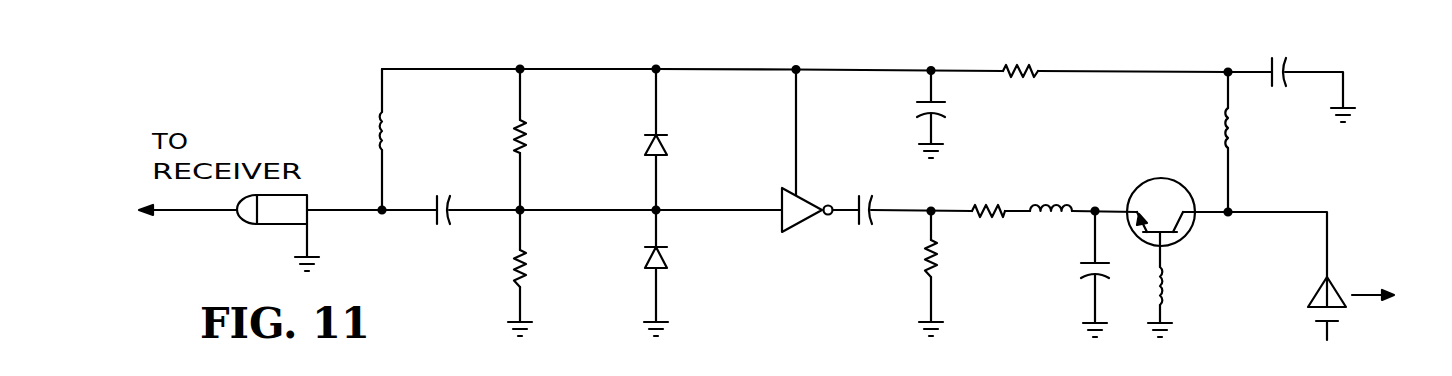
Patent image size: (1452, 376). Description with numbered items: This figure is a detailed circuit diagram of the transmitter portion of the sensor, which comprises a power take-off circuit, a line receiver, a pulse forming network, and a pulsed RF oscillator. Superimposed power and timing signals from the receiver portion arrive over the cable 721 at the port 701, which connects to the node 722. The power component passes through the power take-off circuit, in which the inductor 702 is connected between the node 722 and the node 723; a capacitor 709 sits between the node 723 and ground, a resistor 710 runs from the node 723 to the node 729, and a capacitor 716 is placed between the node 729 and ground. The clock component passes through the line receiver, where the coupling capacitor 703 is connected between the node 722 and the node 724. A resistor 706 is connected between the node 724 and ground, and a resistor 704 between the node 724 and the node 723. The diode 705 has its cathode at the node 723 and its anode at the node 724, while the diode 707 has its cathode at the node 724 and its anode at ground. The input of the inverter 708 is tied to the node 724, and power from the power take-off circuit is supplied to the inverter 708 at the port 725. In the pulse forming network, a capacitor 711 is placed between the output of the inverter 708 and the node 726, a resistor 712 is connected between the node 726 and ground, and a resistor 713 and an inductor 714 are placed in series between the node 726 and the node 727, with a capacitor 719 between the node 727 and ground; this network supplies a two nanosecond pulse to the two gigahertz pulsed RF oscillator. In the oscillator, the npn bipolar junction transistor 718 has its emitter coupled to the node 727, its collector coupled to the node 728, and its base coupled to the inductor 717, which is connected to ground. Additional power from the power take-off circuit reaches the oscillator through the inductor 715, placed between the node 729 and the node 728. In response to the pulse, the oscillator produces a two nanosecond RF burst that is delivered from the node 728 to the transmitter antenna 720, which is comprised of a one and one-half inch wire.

The port 701 is at (272, 235).
The inductor 702 is at (337, 139).
The coupling capacitor 703 is at (455, 233).
The resistor 704 is at (484, 139).
The diode 705 is at (694, 139).
The resistor 706 is at (487, 273).
The diode 707 is at (624, 272).
The inverter 708 is at (771, 197).
The capacitor 709 is at (945, 109).
The resistor 710 is at (1039, 44).
The capacitor 711 is at (831, 237).
The resistor 712 is at (901, 273).
The resistor 713 is at (993, 241).
The inductor 714 is at (1057, 177).
The inductor 715 is at (1233, 136).
The capacitor 716 is at (1311, 56).
The inductor 717 is at (1172, 290).
The npn bipolar junction transistor 718 is at (1187, 228).
The capacitor 719 is at (1062, 274).
The transmitter antenna 720 is at (1367, 284).
The cable 721 is at (188, 237).
The node 722 is at (378, 243).
The node 723 is at (588, 49).
The node 724 is at (557, 187).
The port 725 is at (836, 130).
The node 726 is at (965, 190).
The node 727 is at (1123, 179).
The node 728 is at (1274, 192).
The node 729 is at (1202, 50).